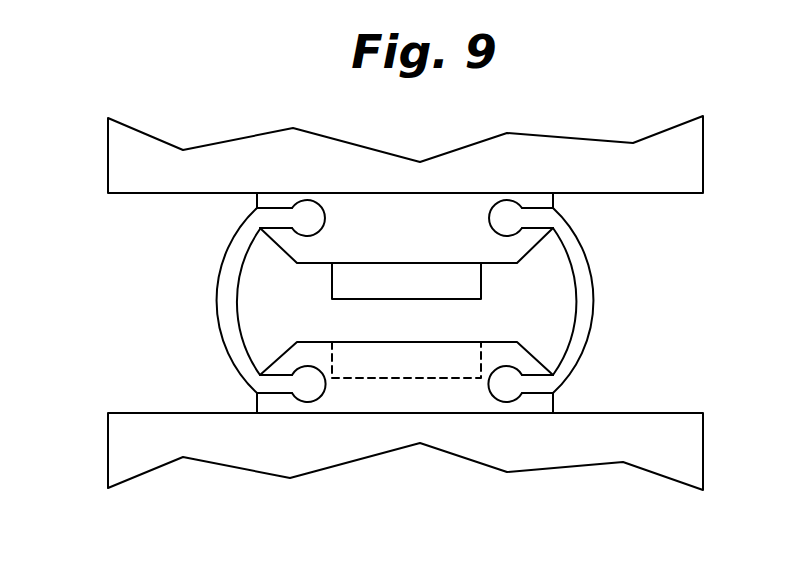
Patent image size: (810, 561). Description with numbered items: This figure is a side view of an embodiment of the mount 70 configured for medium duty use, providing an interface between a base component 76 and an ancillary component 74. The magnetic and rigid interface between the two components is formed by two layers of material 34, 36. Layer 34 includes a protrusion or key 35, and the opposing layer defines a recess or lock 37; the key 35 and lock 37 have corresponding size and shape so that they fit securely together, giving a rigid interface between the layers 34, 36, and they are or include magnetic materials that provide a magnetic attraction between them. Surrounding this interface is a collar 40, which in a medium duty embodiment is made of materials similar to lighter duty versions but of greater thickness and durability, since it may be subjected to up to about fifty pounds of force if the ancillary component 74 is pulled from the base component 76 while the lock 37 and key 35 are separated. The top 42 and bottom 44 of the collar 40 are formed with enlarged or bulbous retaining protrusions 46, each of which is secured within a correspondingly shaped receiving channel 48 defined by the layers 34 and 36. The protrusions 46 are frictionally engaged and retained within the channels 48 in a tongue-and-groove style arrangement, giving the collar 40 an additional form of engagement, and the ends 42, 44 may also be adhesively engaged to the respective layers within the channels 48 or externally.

The mount 70 is at (108, 268).
The ancillary component 74 is at (690, 157).
The base component 76 is at (608, 455).
The collar 40 is at (593, 302).
The layer 34 is at (398, 213).
The layer 36 is at (375, 400).
The key 35 is at (432, 282).
The lock 37 is at (418, 378).
The top of collar 42 is at (533, 207).
The bottom of collar 44 is at (275, 393).
The retaining protrusions 46 is at (313, 210).
The receiving channel 48 is at (300, 203).